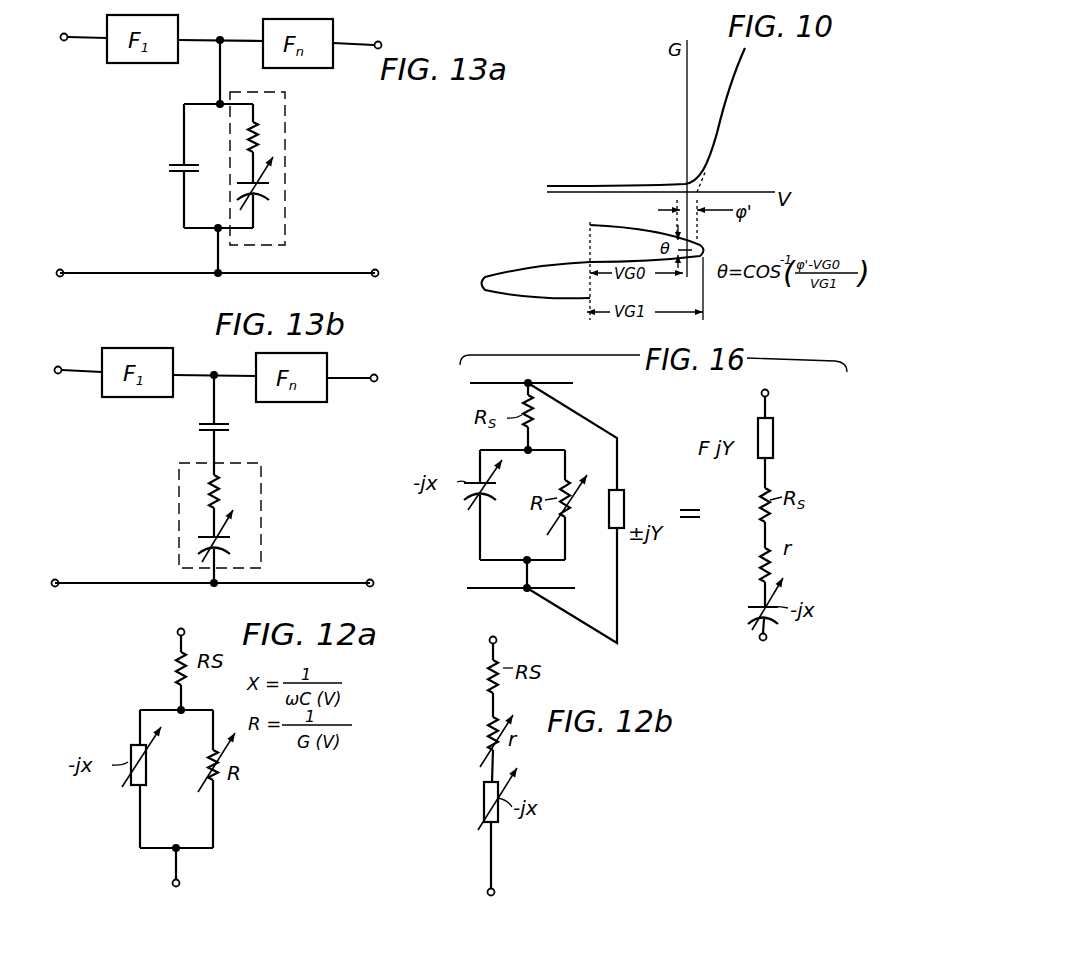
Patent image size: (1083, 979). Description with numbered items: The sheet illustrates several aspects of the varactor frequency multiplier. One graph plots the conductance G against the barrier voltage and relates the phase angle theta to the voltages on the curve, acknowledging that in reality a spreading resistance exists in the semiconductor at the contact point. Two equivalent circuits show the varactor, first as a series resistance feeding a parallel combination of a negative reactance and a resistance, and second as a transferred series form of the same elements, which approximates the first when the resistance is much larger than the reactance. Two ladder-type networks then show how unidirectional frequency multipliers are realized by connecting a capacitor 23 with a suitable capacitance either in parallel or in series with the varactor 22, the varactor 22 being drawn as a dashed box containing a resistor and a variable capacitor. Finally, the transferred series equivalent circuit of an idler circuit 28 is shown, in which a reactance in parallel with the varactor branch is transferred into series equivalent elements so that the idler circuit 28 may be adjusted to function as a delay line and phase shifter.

In FIG. 13a, the varactor 22 is at (287, 132).
In FIG. 13b, the varactor 22 is at (247, 463).
In FIG. 13a, the capacitor 23 is at (182, 163).
In FIG. 13b, the capacitor 23 is at (200, 425).
In FIG. 16, the idler circuit 28 is at (632, 485).